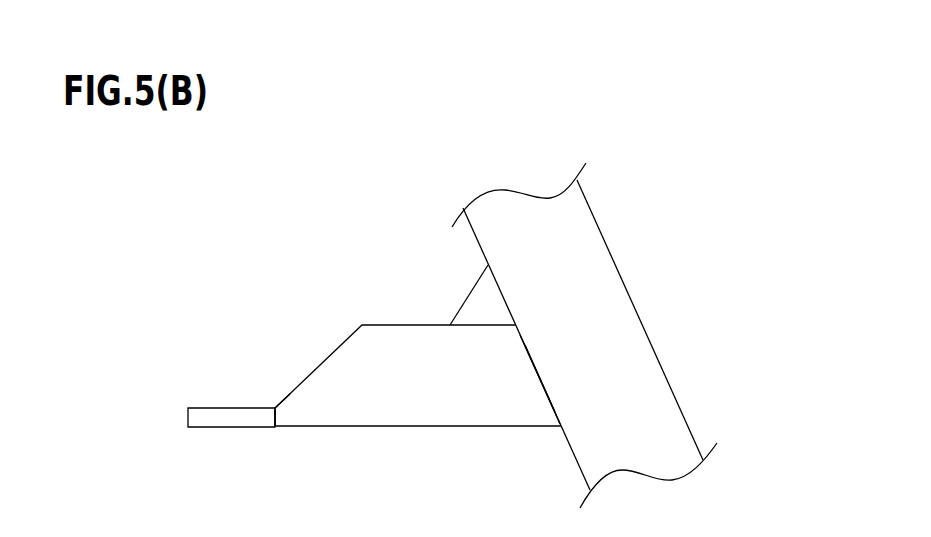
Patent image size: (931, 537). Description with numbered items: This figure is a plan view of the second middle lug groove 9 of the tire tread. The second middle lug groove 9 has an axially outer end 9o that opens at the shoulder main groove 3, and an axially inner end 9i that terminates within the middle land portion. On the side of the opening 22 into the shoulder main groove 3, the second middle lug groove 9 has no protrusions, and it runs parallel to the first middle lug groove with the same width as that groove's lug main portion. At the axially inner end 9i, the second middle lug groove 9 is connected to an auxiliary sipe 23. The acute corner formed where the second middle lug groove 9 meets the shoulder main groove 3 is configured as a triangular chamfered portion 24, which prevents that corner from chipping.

The shoulder main groove 3 is at (535, 228).
The second middle lug groove 9 is at (441, 392).
The axially inner end 9i is at (273, 405).
The axially outer end 9o is at (545, 373).
The opening 22 is at (540, 378).
The auxiliary sipe 23 is at (232, 417).
The triangular chamfered portion 24 is at (485, 310).